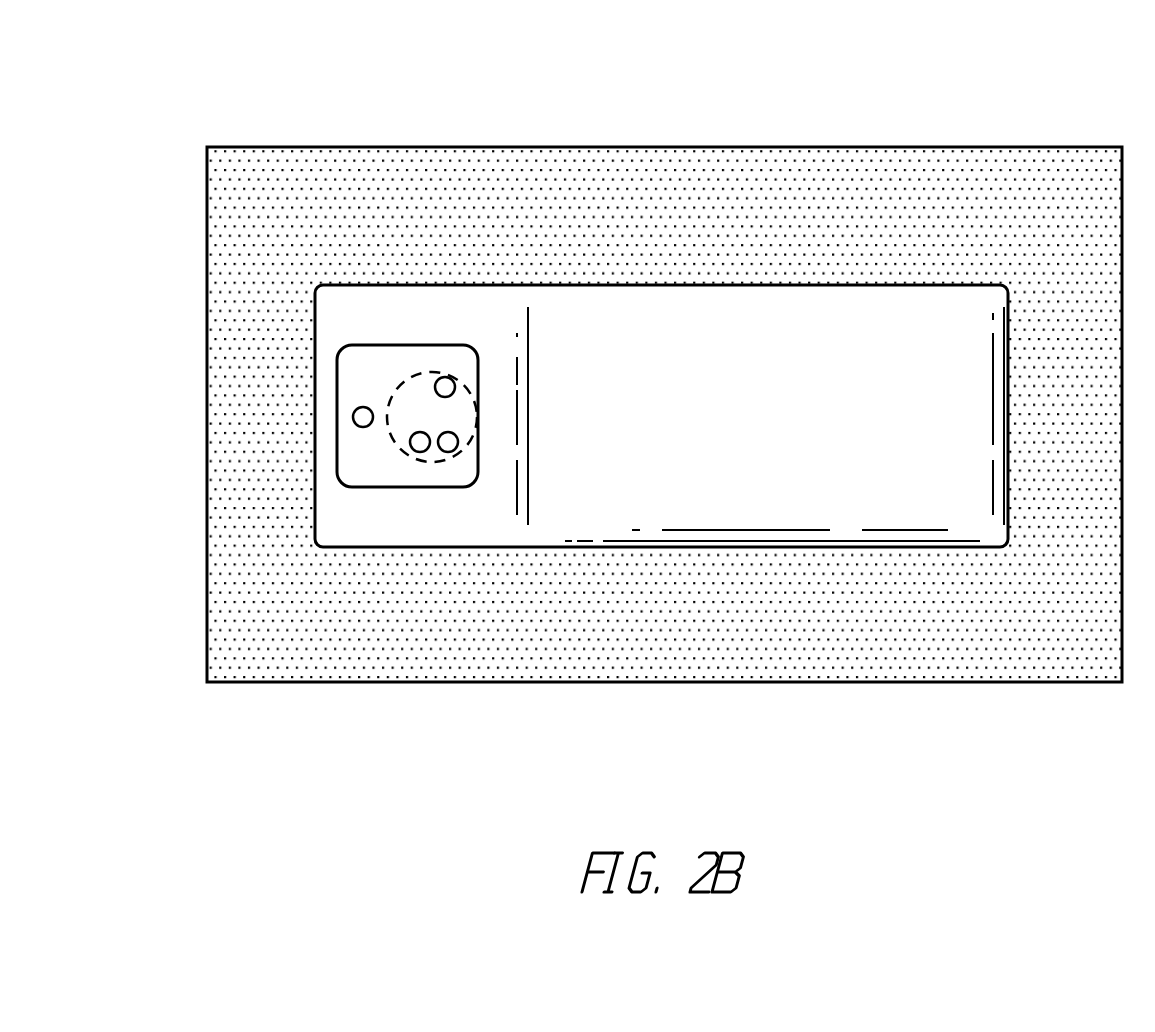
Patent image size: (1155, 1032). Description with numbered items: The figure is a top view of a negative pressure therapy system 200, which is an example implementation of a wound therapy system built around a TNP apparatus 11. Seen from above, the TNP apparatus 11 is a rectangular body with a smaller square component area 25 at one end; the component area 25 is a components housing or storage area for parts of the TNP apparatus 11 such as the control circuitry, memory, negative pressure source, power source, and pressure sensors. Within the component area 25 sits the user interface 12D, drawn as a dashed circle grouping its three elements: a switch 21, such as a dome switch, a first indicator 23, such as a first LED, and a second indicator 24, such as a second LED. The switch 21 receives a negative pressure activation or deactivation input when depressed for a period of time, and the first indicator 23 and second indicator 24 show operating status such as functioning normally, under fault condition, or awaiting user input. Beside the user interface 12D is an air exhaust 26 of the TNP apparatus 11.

The negative pressure therapy system 200 is at (214, 92).
The TNP apparatus 11 is at (738, 317).
The component area 25 is at (353, 367).
The user interface 12D is at (425, 368).
The second indicator 24 is at (453, 375).
The air exhaust 26 is at (353, 415).
The switch 21 is at (418, 453).
The first indicator 23 is at (448, 453).